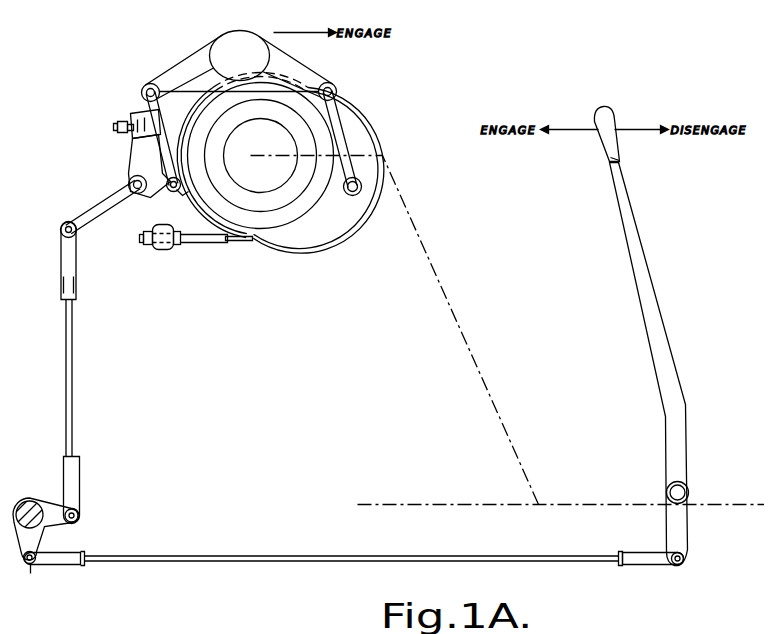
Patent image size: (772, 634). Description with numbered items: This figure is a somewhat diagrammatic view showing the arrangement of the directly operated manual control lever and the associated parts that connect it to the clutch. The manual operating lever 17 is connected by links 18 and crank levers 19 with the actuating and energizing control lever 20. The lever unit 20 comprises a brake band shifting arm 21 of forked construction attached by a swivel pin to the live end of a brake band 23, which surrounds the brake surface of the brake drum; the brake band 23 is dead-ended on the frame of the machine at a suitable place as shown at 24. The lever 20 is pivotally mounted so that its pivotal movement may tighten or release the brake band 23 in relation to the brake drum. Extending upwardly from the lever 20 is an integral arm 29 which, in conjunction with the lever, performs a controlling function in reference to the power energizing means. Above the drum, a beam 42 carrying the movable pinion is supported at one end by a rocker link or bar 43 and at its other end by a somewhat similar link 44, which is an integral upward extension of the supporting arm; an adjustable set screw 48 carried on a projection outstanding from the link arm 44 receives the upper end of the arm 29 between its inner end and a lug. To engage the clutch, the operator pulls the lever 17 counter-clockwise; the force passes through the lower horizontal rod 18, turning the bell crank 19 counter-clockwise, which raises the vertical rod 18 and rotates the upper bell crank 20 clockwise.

The manual operating lever 17 is at (665, 356).
The links 18 is at (70, 413).
The crank levers 19 is at (37, 537).
The actuating and energizing control lever 20 is at (100, 214).
The brake band shifting arm 21 is at (177, 633).
The brake band 23 is at (245, 237).
The dead end of brake band 24 is at (165, 248).
The integral arm 29 is at (137, 150).
The beam 42 is at (289, 63).
The rocker link 43 is at (345, 143).
The link 44 is at (158, 114).
The adjustable set screw 48 is at (116, 127).